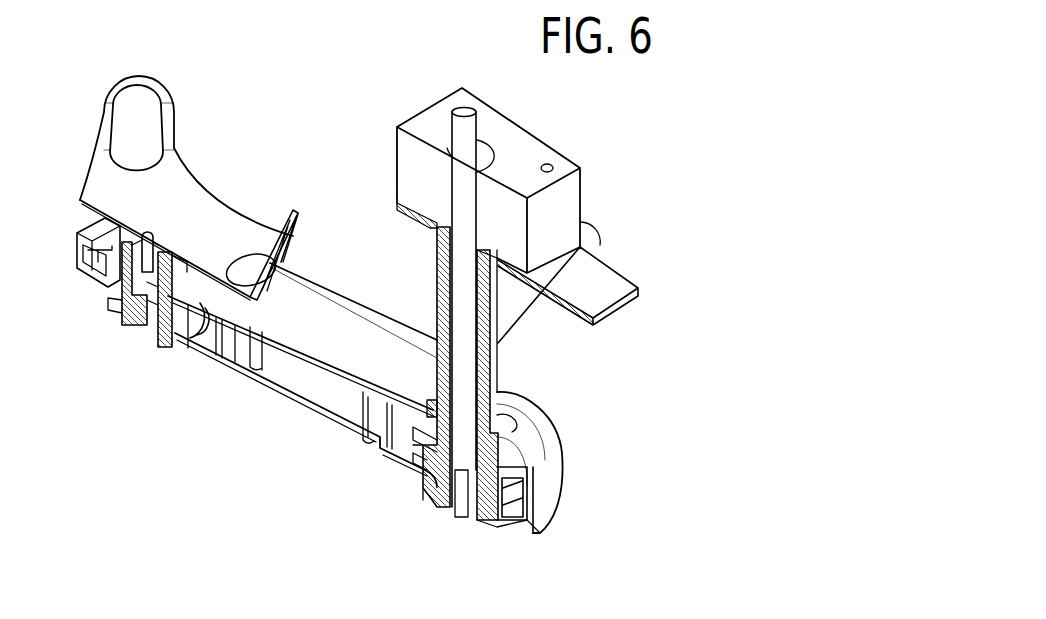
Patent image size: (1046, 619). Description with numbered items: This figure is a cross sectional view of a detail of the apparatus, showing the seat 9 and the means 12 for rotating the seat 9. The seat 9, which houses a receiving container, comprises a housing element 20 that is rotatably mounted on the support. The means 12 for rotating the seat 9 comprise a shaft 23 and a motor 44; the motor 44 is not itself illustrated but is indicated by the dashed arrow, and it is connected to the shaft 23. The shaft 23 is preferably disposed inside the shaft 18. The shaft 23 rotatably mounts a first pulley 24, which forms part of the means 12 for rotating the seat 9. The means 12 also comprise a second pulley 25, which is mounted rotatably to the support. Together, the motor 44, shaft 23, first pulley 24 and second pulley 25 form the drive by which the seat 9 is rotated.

The seat 9 is at (258, 207).
The housing element 20 is at (226, 192).
The motor 44 is at (445, 132).
The shaft 18 is at (510, 362).
The means for rotating the seat 12 is at (320, 418).
The second pulley 25 is at (209, 341).
The shaft 23 is at (434, 516).
The first pulley 24 is at (519, 540).